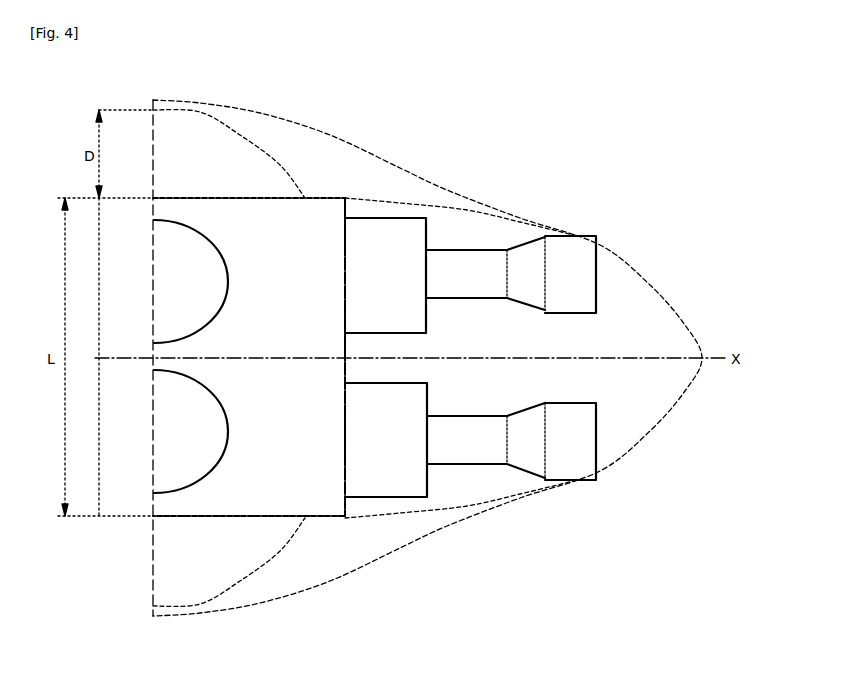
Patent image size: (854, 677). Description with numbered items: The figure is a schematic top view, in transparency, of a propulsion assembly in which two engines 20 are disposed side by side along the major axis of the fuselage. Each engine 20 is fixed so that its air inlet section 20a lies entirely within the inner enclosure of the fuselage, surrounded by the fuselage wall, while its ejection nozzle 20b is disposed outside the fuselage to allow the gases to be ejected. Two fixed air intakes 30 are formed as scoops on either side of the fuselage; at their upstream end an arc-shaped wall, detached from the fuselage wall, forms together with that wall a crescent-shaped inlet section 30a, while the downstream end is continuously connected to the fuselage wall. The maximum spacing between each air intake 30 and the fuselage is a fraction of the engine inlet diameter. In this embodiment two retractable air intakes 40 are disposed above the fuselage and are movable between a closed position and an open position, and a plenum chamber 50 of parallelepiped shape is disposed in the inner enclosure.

The engine 20 is at (470, 257).
The air inlet section 20a is at (345, 278).
The ejection nozzle 20b is at (585, 288).
The fixed air intake 30 is at (233, 130).
The inlet section 30a is at (152, 152).
The retractable air intake 40 is at (192, 293).
The plenum chamber 50 is at (238, 498).